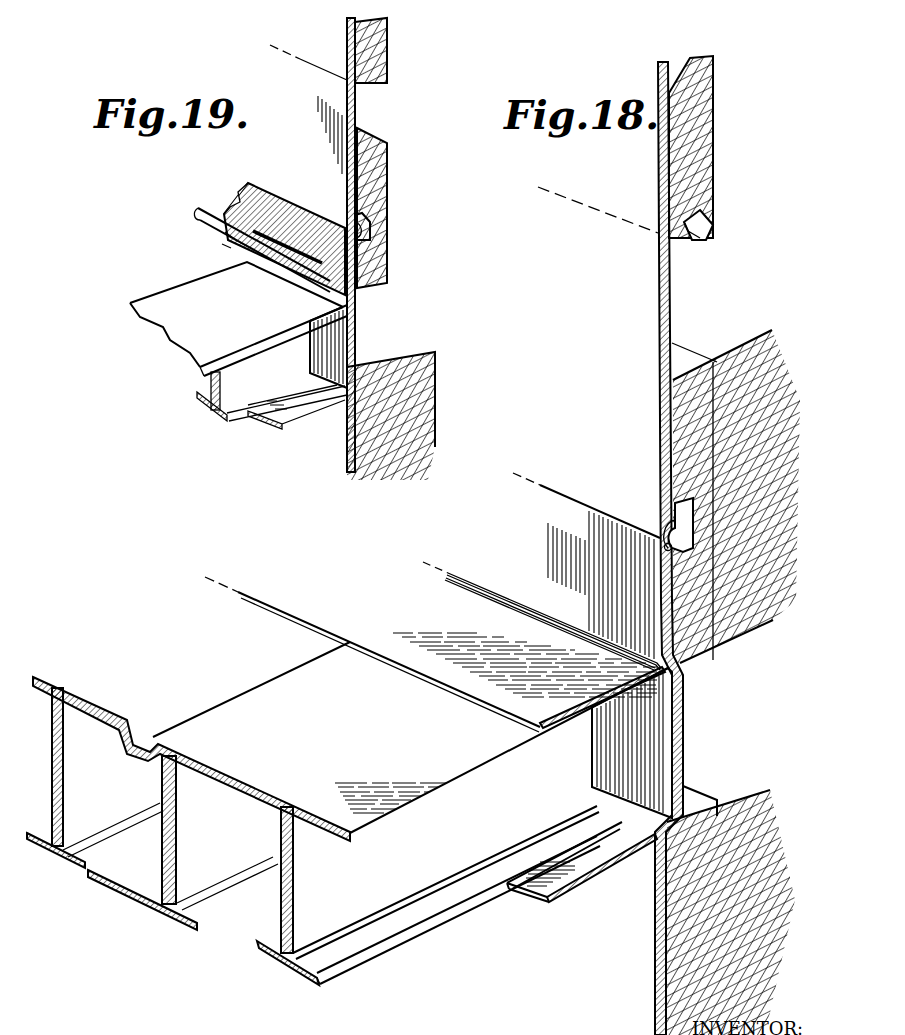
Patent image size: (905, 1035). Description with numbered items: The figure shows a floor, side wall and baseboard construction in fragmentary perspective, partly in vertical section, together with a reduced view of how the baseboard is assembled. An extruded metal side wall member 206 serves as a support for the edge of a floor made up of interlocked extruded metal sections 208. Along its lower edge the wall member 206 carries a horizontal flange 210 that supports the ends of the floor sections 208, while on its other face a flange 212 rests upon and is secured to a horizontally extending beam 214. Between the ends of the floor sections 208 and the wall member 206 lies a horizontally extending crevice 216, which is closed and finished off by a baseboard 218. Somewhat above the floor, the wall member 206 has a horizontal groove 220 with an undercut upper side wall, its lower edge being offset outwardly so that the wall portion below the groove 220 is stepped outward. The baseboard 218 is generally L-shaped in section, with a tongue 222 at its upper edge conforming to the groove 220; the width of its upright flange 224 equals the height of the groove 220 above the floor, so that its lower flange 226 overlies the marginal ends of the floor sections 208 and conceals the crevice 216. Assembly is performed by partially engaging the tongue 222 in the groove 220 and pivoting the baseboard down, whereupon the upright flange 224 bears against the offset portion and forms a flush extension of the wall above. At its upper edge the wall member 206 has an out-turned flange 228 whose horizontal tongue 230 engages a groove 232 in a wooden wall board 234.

In FIG. 19, the side wall member 206 is at (372, 328).
In FIG. 18, the side wall member 206 is at (692, 735).
In FIG. 19, the extruded metal sections 208 is at (190, 292).
In FIG. 18, the extruded metal sections 208 is at (307, 700).
In FIG. 19, the horizontal flange 210 is at (307, 415).
In FIG. 18, the horizontal flange 210 is at (563, 893).
In FIG. 18, the flange 212 is at (697, 800).
In FIG. 19, the horizontally extending beam 214 is at (347, 472).
In FIG. 18, the horizontally extending beam 214 is at (660, 988).
In FIG. 19, the crevice 216 is at (272, 278).
In FIG. 18, the crevice 216 is at (662, 684).
In FIG. 19, the baseboard 218 is at (225, 194).
In FIG. 18, the baseboard 218 is at (460, 622).
In FIG. 18, the groove 220 is at (664, 548).
In FIG. 19, the tongue 222 is at (359, 237).
In FIG. 18, the tongue 222 is at (665, 543).
In FIG. 19, the upright flange 224 is at (273, 216).
In FIG. 18, the upright flange 224 is at (545, 540).
In FIG. 19, the lower flange 226 is at (230, 245).
In FIG. 18, the lower flange 226 is at (478, 672).
In FIG. 18, the out-turned flange 228 is at (713, 227).
In FIG. 18, the horizontal tongue 230 is at (683, 207).
In FIG. 18, the groove 232 is at (682, 238).
In FIG. 18, the wooden wall board 234 is at (713, 133).